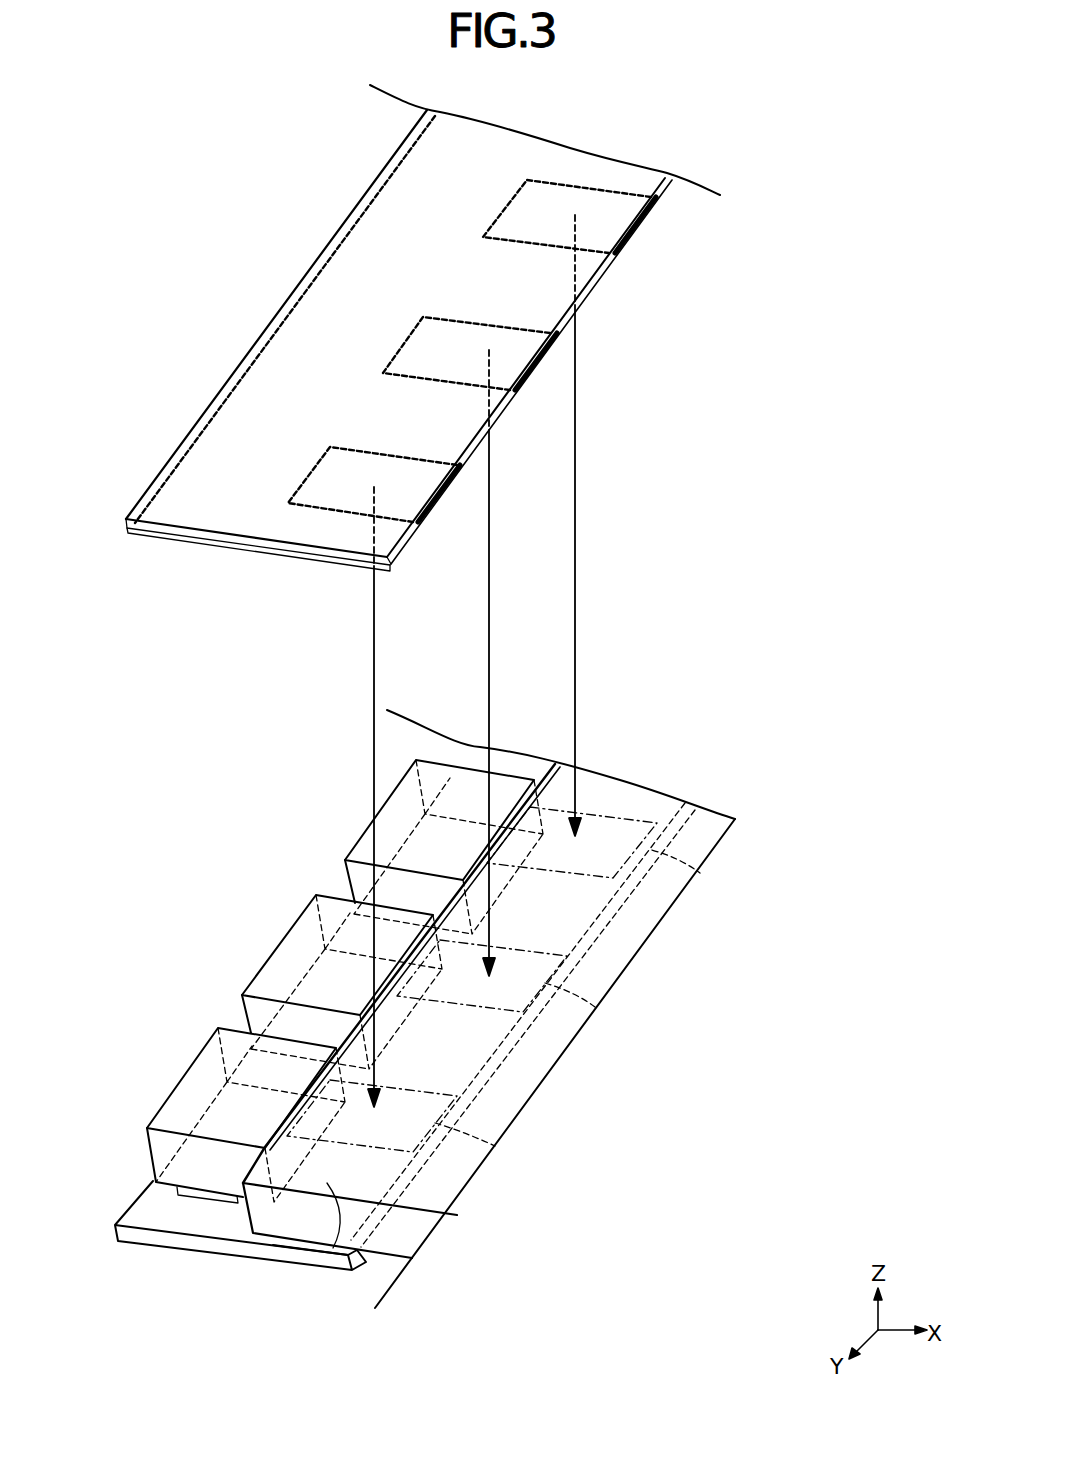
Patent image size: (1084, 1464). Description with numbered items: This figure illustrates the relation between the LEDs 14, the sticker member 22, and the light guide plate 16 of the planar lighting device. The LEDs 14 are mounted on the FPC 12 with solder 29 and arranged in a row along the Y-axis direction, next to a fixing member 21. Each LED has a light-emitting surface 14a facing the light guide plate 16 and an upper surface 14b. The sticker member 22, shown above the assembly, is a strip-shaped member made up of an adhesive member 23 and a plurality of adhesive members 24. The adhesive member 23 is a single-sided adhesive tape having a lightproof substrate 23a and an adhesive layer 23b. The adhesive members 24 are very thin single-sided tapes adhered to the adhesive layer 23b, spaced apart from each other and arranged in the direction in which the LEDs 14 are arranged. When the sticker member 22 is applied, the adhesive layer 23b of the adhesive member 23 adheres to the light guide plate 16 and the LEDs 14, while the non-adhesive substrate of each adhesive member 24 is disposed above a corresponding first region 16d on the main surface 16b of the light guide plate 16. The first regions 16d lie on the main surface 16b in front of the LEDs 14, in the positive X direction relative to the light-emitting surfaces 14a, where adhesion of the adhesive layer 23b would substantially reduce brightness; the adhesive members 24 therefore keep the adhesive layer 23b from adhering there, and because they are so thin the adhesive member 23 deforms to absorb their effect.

The FPC 12 is at (242, 1252).
The LEDs 14 is at (304, 975).
The light-emitting surface 14a is at (610, 892).
The upper surfaces of the LEDs 14b is at (397, 800).
The light guide plate 16 is at (503, 1049).
The main surface 16b is at (333, 1249).
The first regions 16d is at (703, 875).
The fixing member 21 is at (305, 1252).
The sticker member 22 is at (426, 376).
The adhesive member 23 is at (258, 593).
The substrate 23a is at (258, 543).
The adhesive layer 23b is at (300, 613).
The adhesive members 24 is at (640, 232).
The solder 29 is at (205, 1200).